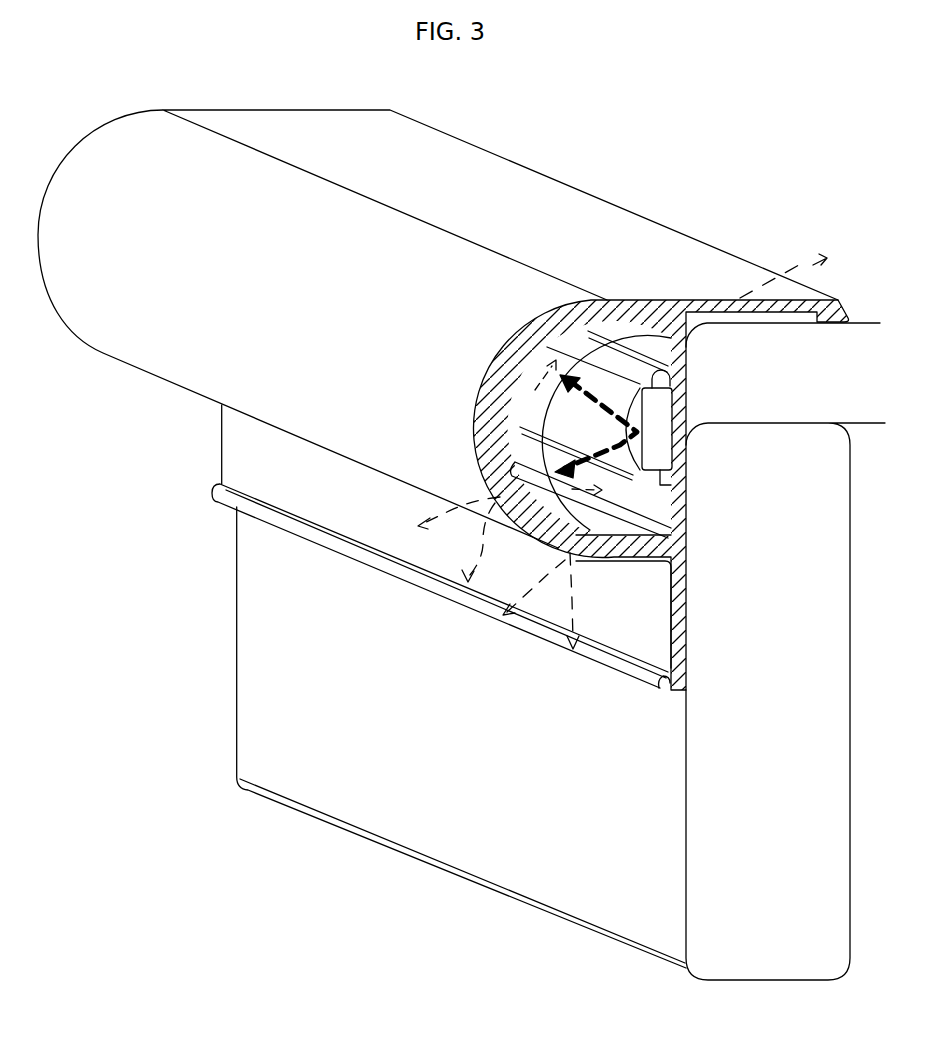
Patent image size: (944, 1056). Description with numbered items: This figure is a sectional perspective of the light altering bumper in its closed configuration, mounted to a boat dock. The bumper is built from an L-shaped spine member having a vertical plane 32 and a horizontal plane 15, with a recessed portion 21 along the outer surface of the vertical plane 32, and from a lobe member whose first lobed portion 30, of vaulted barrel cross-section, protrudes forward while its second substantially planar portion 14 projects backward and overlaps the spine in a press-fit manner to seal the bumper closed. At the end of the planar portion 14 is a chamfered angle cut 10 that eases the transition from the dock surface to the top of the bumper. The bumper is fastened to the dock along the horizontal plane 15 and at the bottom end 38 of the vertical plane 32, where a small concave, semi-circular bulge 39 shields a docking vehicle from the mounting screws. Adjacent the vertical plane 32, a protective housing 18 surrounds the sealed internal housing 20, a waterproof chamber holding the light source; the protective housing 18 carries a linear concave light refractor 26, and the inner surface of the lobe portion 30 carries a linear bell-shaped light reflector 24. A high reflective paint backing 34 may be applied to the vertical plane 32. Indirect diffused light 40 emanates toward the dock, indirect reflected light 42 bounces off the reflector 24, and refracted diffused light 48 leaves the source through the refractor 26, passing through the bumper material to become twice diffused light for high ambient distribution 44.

The chamfered angle cut 10 is at (843, 304).
The second substantially planar portion 14 is at (700, 300).
The horizontal plane 15 is at (760, 323).
The protective housing 18 is at (625, 394).
The sealed internal housing 20 is at (674, 458).
The recessed portion 21 is at (688, 432).
The linear bell-shaped light reflector 24 is at (516, 420).
The linear concave light refractor 26 is at (597, 468).
The first lobed portion 30 is at (508, 355).
The vertical plane 32 is at (686, 500).
The high reflective paint backing 34 is at (688, 548).
The bottom end 38 is at (688, 652).
The small concave semi-circular bulge 39 is at (666, 698).
The indirect diffused light 40 is at (800, 264).
The indirect reflected light 42 is at (568, 419).
The twice diffused light for high ambient distribution 44 is at (436, 513).
The refracted diffused light 48 is at (579, 373).